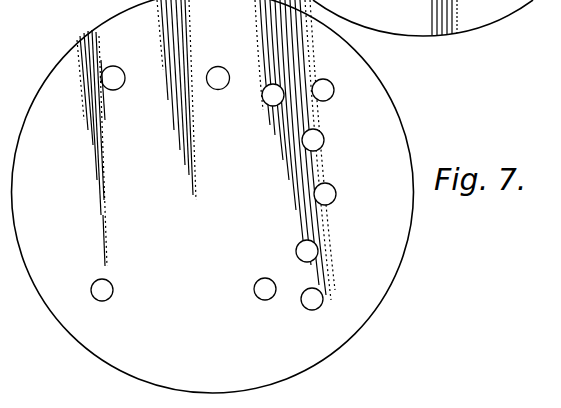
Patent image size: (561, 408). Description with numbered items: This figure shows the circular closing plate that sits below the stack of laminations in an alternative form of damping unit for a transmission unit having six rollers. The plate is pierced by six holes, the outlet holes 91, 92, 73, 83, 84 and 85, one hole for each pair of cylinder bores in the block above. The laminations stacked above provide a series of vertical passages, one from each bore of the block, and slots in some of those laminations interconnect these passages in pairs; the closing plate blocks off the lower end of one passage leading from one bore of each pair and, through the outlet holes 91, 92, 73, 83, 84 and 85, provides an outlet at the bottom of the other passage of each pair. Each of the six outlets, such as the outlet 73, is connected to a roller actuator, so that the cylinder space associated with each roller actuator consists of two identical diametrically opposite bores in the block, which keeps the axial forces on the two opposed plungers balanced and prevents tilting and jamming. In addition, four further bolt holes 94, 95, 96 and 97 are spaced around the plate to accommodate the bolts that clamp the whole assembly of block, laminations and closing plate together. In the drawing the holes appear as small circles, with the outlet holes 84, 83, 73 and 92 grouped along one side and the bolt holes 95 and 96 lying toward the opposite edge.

The bolt hole 95 is at (147, 93).
The outlet hole 85 is at (234, 97).
The outlet hole 84 is at (272, 106).
The bolt hole 94 is at (376, 76).
The outlet hole 83 is at (367, 132).
The outlet 73 is at (380, 185).
The outlet hole 92 is at (371, 241).
The bolt hole 96 is at (156, 276).
The outlet hole 91 is at (259, 298).
The bolt hole 97 is at (327, 319).